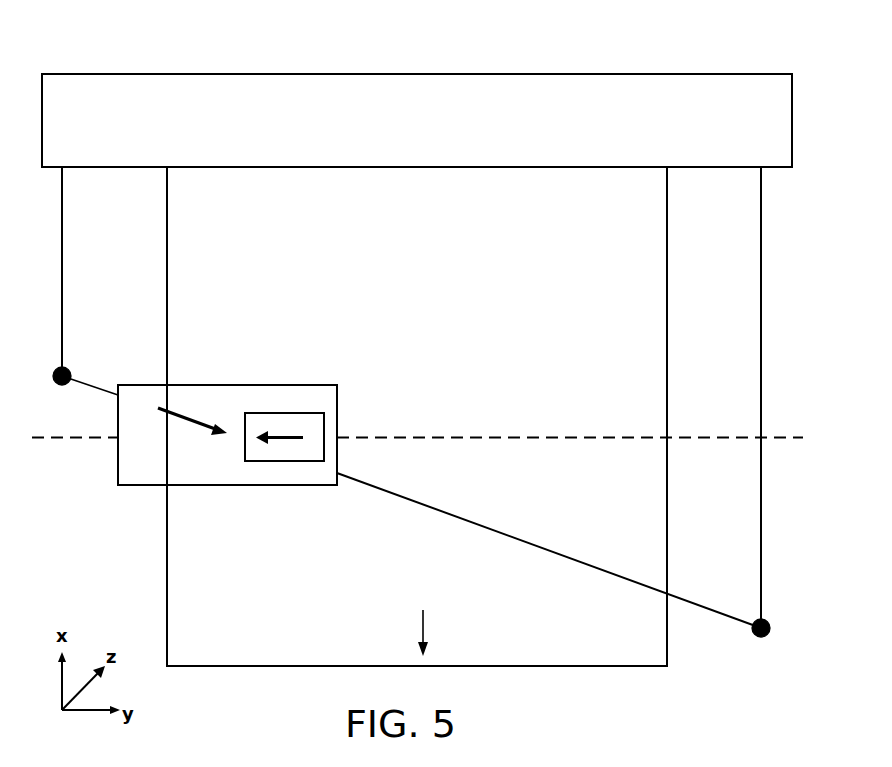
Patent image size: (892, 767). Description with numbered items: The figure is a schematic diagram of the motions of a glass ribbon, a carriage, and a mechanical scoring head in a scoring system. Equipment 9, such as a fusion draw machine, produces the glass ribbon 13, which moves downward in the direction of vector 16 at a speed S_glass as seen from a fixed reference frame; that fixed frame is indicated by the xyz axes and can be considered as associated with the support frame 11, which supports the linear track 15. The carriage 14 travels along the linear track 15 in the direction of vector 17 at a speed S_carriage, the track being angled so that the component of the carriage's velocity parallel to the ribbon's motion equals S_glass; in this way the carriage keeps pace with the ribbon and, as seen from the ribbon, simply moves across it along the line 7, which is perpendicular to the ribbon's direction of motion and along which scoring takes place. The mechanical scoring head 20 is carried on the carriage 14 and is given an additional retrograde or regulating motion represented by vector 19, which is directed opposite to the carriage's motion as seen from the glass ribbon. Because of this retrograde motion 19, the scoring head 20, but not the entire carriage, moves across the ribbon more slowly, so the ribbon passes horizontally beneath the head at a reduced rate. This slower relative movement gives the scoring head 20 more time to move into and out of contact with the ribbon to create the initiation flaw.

The line along which scoring takes place 7 is at (627, 439).
The equipment which produces glass ribbon 9 is at (515, 85).
The support frame for linear track 11 is at (62, 268).
The glass ribbon 13 is at (605, 648).
The carriage 14 is at (245, 402).
The linear track 15 is at (407, 500).
The vector representing motion of ribbon 16 is at (423, 623).
The vector representing motion of carriage 17 is at (187, 418).
The vector representing retrograde motion of mechanical scoring head 19 is at (297, 443).
The mechanical scoring head 20 is at (258, 450).